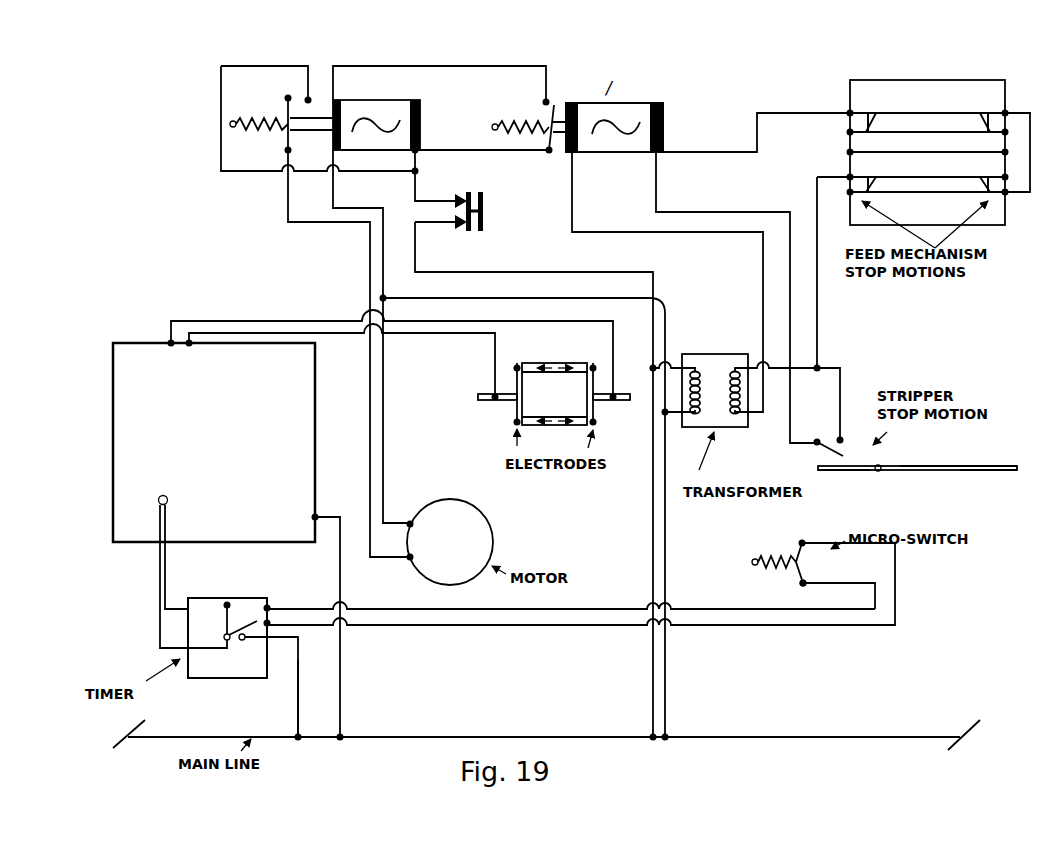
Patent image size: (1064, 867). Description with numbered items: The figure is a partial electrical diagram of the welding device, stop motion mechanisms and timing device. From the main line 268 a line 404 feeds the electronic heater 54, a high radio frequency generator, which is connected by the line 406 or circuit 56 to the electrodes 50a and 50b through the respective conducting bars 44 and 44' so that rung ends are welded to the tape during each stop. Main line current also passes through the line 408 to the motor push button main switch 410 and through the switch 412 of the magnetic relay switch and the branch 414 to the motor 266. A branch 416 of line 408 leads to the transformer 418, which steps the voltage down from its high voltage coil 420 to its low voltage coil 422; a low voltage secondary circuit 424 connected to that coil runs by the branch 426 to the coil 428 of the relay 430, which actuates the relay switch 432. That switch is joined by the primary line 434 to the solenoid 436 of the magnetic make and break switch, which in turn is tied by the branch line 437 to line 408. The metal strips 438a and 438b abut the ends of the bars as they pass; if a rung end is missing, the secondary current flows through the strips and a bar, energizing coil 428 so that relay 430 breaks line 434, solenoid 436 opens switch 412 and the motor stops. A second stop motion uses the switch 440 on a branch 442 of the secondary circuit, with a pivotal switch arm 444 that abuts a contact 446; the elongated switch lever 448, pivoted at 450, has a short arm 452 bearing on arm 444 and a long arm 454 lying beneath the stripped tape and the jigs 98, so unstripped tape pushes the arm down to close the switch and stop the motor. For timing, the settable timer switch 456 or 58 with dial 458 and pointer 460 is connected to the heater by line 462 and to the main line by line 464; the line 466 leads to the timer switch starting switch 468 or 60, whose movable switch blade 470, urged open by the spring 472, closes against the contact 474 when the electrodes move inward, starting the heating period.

The switch of the magnetic relay switch 412 is at (286, 99).
The solenoid 436 is at (422, 104).
The branch line 437 is at (415, 192).
The branch of the main primary circuit 414 is at (303, 220).
The motor push button main switch 410 is at (486, 212).
The primary line 434 is at (487, 152).
The relay switch 432 is at (555, 106).
The relay coil 428 is at (644, 103).
The relay 430 is at (646, 90).
The branch 426 is at (656, 184).
The secondary circuit 424 is at (817, 188).
The metal strip 438a is at (985, 118).
The conducting bar 44' is at (755, 255).
The metal strip 438b is at (985, 182).
The conducting bar 44 is at (755, 312).
The electronic heater 54 is at (128, 409).
The electrical circuit 56 is at (311, 332).
The line 406 is at (437, 322).
The line 408 is at (534, 272).
The electrode 50a is at (518, 366).
The electrode 50b is at (593, 366).
The jig 98 is at (526, 404).
The high voltage coil 420 is at (688, 394).
The branch 416 is at (680, 366).
The transformer 418 is at (716, 357).
The low voltage coil 422 is at (737, 414).
The branch 442 is at (842, 408).
The contact 446 is at (840, 438).
The pivotal switch arm 444 is at (826, 452).
The switch 440 is at (884, 464).
The pivot 450 is at (882, 471).
The elongated switch lever 448 is at (976, 463).
The short arm 452 is at (845, 472).
The long arm 454 is at (975, 471).
The motor 266 is at (481, 539).
The timer switch starting switch 60 is at (797, 541).
The spring 472 is at (766, 556).
The movable switch blade 470 is at (796, 584).
The contact 474 is at (808, 584).
The timer switch starting switch 468 is at (870, 557).
The line 466 is at (414, 620).
The settable timer switch 456 is at (228, 599).
The settable timer switch 58 is at (255, 607).
The dial 458 is at (262, 671).
The settable pointer 460 is at (270, 627).
The line 462 is at (169, 648).
The line 464 is at (298, 719).
The line 404 is at (340, 674).
The main line 268 is at (435, 737).